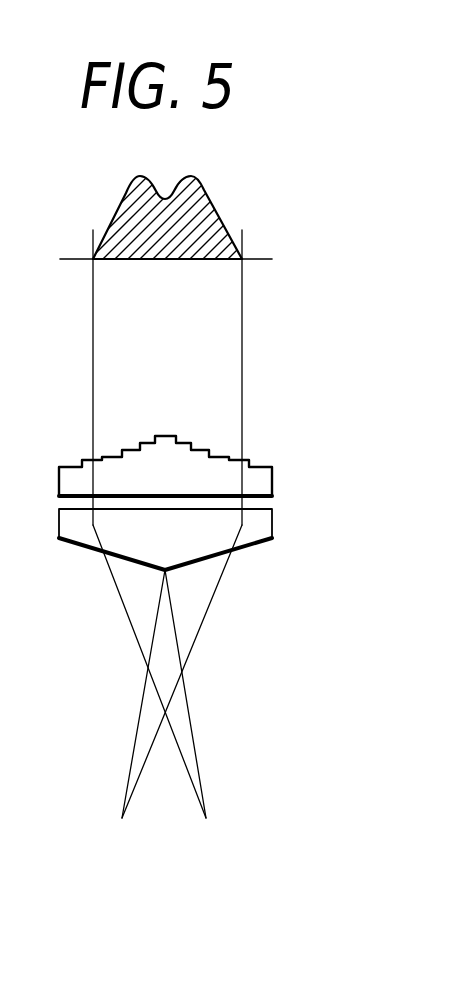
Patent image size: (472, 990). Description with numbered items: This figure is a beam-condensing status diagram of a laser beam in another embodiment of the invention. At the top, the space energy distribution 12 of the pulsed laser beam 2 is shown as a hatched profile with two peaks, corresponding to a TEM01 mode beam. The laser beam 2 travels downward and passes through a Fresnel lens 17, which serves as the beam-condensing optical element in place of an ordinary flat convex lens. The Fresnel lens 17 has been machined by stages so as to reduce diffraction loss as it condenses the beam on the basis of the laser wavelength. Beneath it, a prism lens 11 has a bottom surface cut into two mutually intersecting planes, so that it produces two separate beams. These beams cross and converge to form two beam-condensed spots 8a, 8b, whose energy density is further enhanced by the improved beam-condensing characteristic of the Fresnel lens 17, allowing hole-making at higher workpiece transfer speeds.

The space energy distribution 12 is at (223, 210).
The laser beam 2 is at (232, 390).
The Fresnel lens 17 is at (263, 482).
The prism lens 11 is at (263, 530).
The beam-condensed spot 8a is at (118, 817).
The beam-condensed spot 8b is at (212, 817).